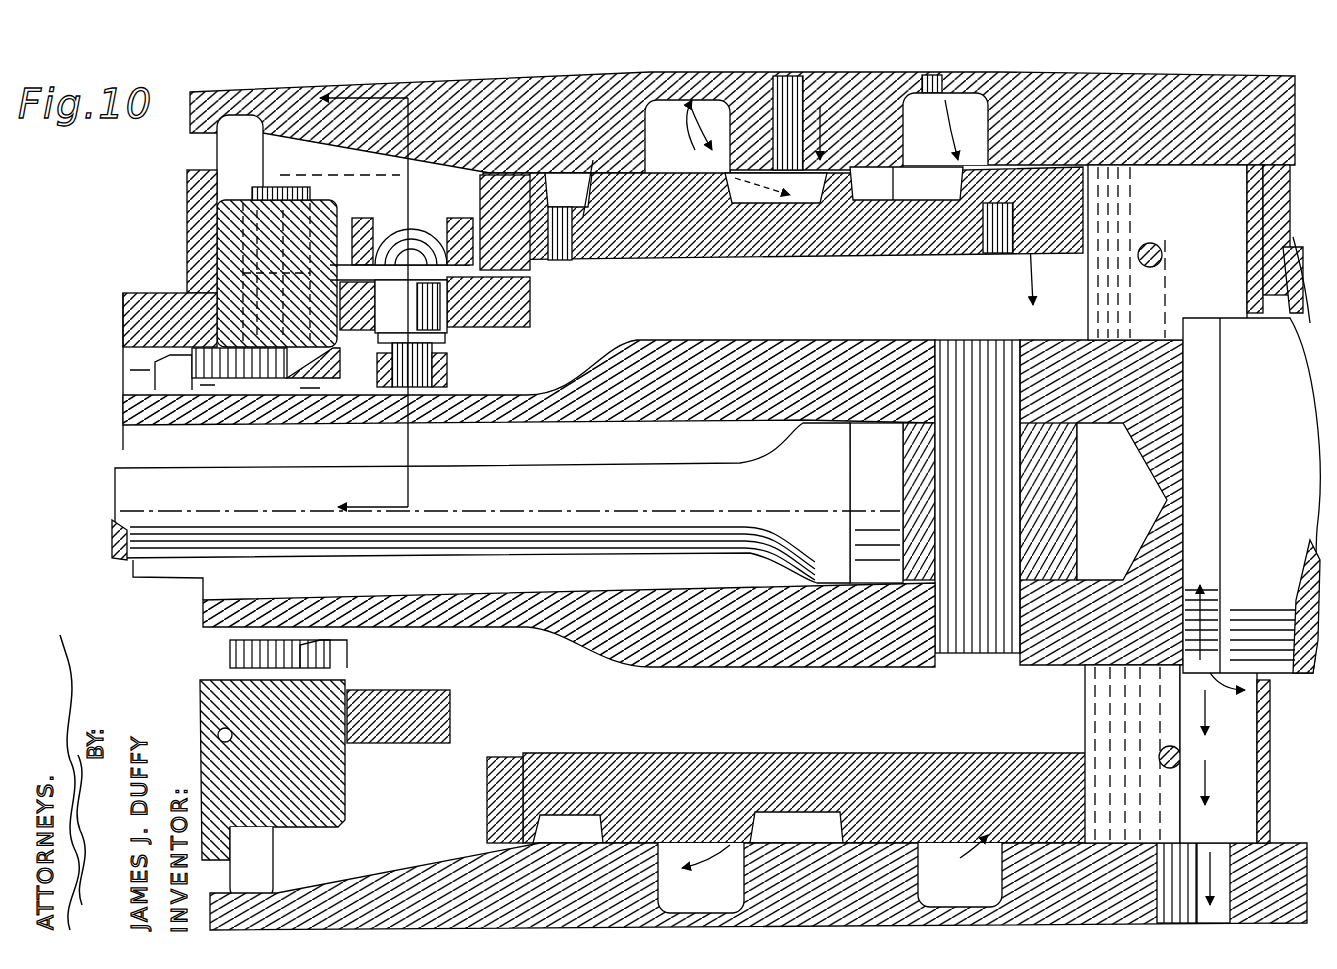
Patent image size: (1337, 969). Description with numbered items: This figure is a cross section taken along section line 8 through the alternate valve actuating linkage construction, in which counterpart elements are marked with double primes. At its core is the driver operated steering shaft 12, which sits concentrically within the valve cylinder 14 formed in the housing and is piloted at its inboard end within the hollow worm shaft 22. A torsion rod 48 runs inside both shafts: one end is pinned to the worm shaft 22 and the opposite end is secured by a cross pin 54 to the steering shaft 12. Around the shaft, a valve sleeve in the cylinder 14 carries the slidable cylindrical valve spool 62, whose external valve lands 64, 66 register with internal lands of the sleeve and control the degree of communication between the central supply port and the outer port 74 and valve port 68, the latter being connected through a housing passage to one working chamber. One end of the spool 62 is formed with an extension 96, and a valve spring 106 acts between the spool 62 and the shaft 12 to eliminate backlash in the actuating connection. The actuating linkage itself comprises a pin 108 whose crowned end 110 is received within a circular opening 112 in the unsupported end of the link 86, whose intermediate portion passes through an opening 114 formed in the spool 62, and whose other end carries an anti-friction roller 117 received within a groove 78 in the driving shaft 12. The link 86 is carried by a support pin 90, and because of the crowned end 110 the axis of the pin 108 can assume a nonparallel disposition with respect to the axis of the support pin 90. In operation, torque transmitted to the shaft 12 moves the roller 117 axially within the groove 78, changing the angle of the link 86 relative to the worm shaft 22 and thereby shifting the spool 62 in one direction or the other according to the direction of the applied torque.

The section line 8- 8 is at (342, 304).
The driver operated steering shaft 12 is at (1187, 337).
The valve cylinder 14 is at (1197, 170).
The worm shaft 22 is at (187, 257).
The torsion rod 48 is at (805, 445).
The cross pin 54 is at (950, 487).
The valve spool 62 is at (807, 753).
The external valve land 64 is at (680, 850).
The external valve land 66 is at (950, 850).
The valve port 68 is at (1023, 200).
The port 74 is at (585, 173).
The groove 78 is at (363, 387).
The link 86 is at (367, 217).
The support pin 90 is at (212, 195).
The extension 96 is at (335, 380).
The valve spring 106 is at (1147, 247).
The pin 108 is at (447, 297).
The crowned end 110 is at (428, 217).
The circular opening 112 is at (543, 267).
The opening 114 is at (530, 327).
The anti-friction roller 117 is at (432, 390).